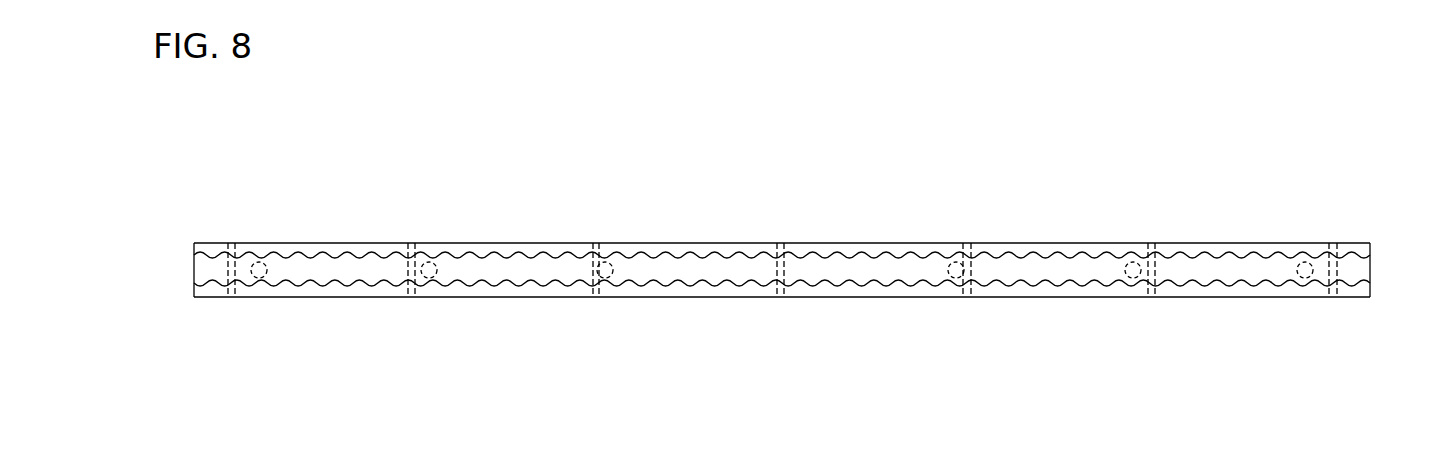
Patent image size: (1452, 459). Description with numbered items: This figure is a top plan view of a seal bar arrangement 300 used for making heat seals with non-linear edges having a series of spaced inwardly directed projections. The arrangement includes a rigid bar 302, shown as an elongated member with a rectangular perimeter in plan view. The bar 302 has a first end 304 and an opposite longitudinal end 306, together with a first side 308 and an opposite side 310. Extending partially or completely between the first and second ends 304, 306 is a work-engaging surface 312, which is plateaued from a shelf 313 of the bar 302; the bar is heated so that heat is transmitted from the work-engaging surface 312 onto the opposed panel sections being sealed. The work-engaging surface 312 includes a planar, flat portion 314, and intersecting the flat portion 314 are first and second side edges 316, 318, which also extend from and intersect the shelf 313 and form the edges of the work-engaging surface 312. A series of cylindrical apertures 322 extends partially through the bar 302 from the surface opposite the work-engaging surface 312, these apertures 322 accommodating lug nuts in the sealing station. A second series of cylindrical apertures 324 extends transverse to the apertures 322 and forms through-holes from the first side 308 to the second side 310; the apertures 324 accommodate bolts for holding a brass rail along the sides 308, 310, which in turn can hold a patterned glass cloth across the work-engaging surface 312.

The seal bar arrangement 300 is at (496, 168).
The rigid bar 302 is at (336, 242).
The first end 304 is at (193, 269).
The opposite longitudinal end 306 is at (1371, 272).
The first side 308 is at (687, 298).
The opposite side 310 is at (875, 242).
The work-engaging surface 312 is at (698, 268).
The shelf 313 is at (367, 290).
The flat portion 314 is at (1055, 273).
The first side edge 316 is at (518, 252).
The second side edge 318 is at (543, 285).
The cylindrical apertures 322 is at (258, 272).
The second series of cylindrical apertures 324 is at (597, 296).